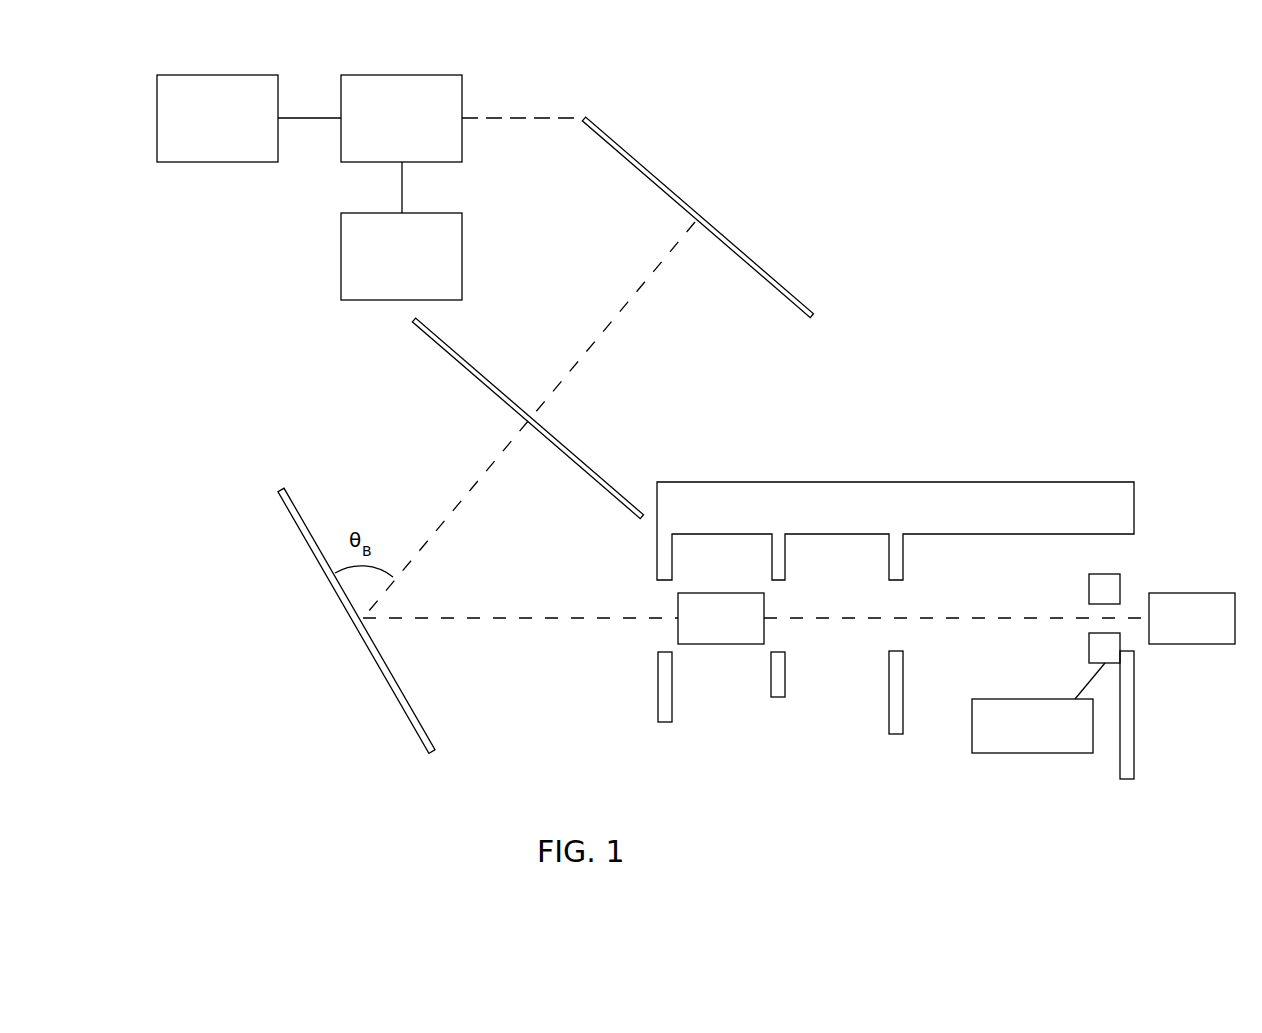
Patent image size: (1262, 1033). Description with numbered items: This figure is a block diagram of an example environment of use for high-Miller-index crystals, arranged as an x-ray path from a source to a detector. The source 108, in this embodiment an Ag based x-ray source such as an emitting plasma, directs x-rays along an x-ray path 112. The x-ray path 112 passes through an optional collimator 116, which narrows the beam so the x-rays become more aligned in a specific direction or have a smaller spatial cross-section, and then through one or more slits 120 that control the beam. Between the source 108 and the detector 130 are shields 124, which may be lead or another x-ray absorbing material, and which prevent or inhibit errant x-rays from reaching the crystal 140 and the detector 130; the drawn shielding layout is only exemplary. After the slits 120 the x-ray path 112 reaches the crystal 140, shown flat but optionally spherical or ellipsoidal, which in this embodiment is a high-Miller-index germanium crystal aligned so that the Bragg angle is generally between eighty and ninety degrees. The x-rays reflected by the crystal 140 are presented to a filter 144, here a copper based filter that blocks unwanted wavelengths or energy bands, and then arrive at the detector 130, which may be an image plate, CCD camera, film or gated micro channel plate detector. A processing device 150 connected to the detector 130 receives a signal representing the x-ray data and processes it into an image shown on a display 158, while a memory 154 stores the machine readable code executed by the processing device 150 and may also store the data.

The source 108 is at (1185, 593).
The x-ray path 112 is at (636, 292).
The collimator 116 is at (1087, 647).
The slits 120 is at (693, 644).
The shields 124 is at (970, 482).
The detector 130 is at (767, 267).
The crystal 140 is at (388, 682).
The filter 144 is at (475, 362).
The processing device 150 is at (427, 75).
The memory 154 is at (237, 75).
The display 158 is at (462, 238).